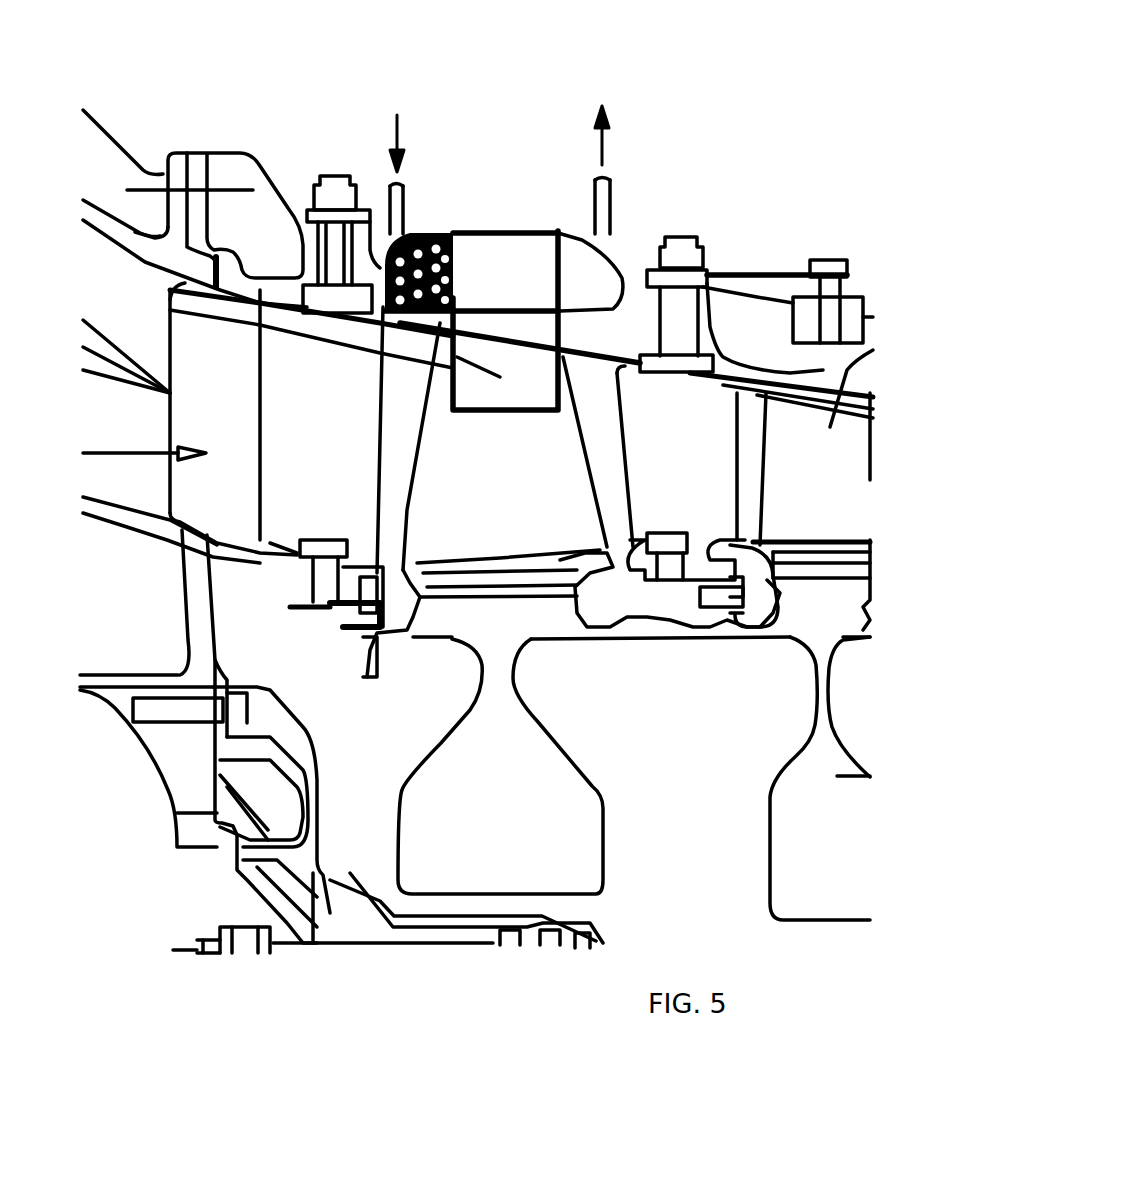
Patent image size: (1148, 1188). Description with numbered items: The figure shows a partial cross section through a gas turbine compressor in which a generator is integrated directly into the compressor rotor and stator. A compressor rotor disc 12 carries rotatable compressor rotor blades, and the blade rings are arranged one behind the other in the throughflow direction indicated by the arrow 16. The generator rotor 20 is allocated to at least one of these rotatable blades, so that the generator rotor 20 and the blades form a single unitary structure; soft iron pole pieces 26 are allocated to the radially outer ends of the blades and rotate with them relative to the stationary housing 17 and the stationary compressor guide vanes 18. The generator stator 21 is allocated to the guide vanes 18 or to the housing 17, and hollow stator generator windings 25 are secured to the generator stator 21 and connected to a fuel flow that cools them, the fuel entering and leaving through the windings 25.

The compressor rotor disc 12 is at (549, 776).
The arrow 16 is at (123, 457).
The stationary housing 17 is at (268, 220).
The stationary compressor guide vane 18 is at (713, 420).
The generator rotor 20 is at (493, 473).
The generator stator 21 is at (507, 277).
The hollow stator generator winding 25 is at (430, 234).
The pole piece 26 is at (220, 307).